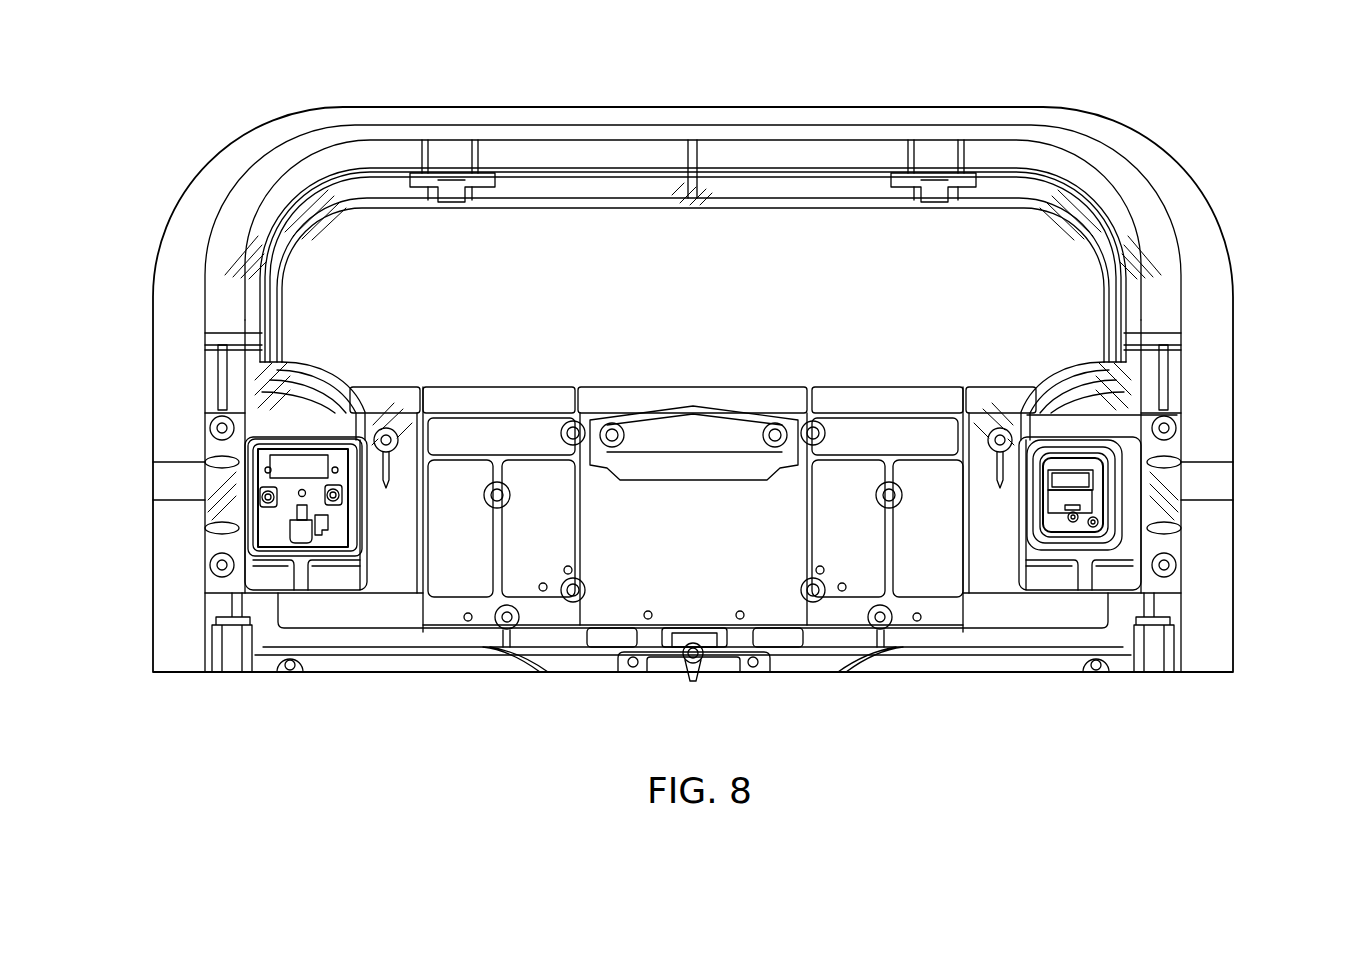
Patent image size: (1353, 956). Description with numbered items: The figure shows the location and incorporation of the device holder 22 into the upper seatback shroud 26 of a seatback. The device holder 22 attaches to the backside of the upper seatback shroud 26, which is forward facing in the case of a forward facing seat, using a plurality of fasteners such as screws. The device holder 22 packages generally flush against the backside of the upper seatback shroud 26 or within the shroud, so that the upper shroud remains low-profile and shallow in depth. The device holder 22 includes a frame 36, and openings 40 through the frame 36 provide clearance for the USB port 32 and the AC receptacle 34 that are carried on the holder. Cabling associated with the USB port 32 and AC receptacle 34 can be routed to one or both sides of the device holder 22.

The device holder 22 is at (997, 635).
The upper seatback shroud 26 is at (1150, 152).
The USB port 32 is at (1077, 495).
The AC receptacle 34 is at (295, 484).
The frame 36 is at (393, 600).
The openings 40 is at (265, 575).